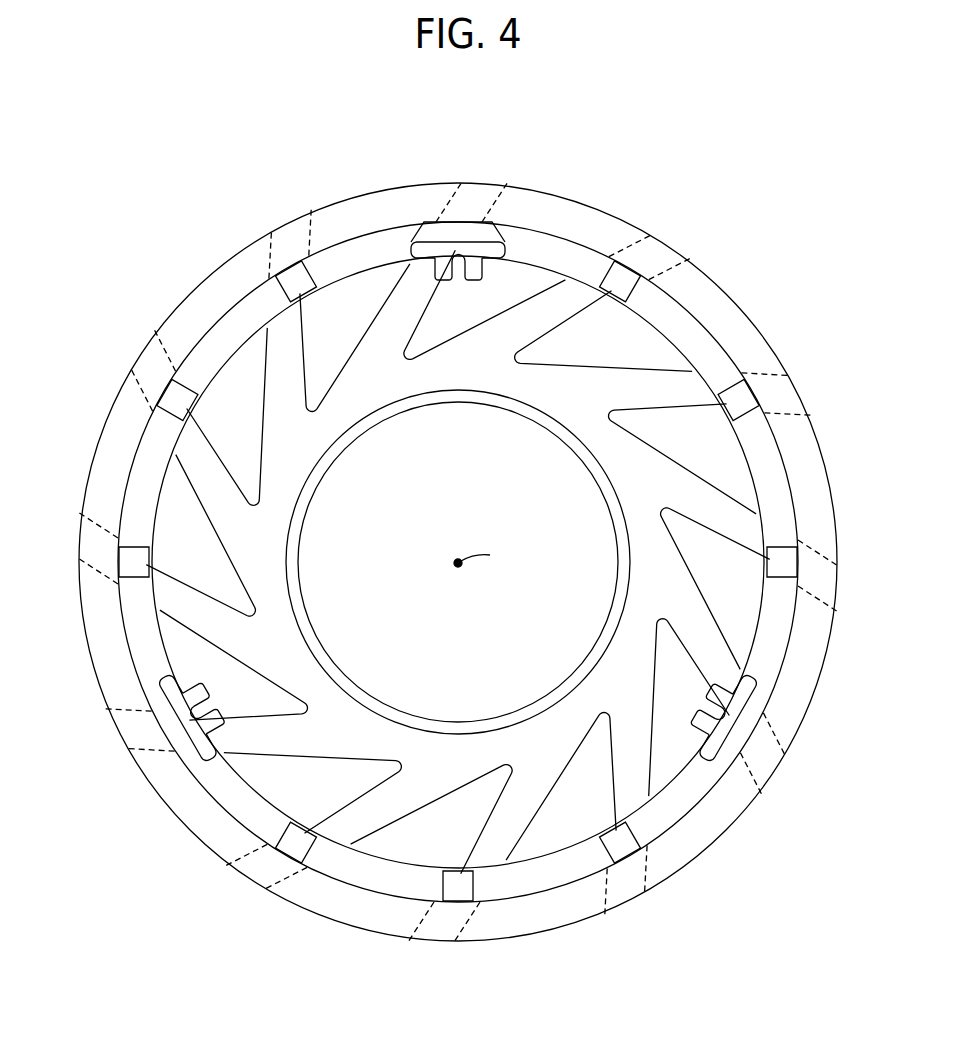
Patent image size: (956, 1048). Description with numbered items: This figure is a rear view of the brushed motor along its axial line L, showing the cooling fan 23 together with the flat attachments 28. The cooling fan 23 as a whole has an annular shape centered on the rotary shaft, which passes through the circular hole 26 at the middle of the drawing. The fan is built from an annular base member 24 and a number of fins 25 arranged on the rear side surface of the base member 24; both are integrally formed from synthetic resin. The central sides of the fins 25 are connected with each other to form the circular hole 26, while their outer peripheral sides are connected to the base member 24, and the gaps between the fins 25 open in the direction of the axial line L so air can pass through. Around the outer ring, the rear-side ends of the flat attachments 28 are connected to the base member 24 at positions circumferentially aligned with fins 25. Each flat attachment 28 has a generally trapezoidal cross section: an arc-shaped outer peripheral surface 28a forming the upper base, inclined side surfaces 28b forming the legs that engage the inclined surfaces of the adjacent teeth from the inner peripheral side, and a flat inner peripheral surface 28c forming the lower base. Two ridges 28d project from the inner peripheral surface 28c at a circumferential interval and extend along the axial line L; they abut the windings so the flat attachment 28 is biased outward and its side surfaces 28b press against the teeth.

The cooling fan 23 is at (343, 205).
The base member 24 is at (332, 223).
The fins 25 is at (397, 280).
The circular hole 26 is at (378, 438).
The flat attachment 28 is at (471, 454).
The outer peripheral surface 28a is at (450, 223).
The side surfaces 28b is at (413, 227).
The inner peripheral surface 28c is at (483, 266).
The ridges 28d is at (471, 281).
The axial line L is at (483, 552).